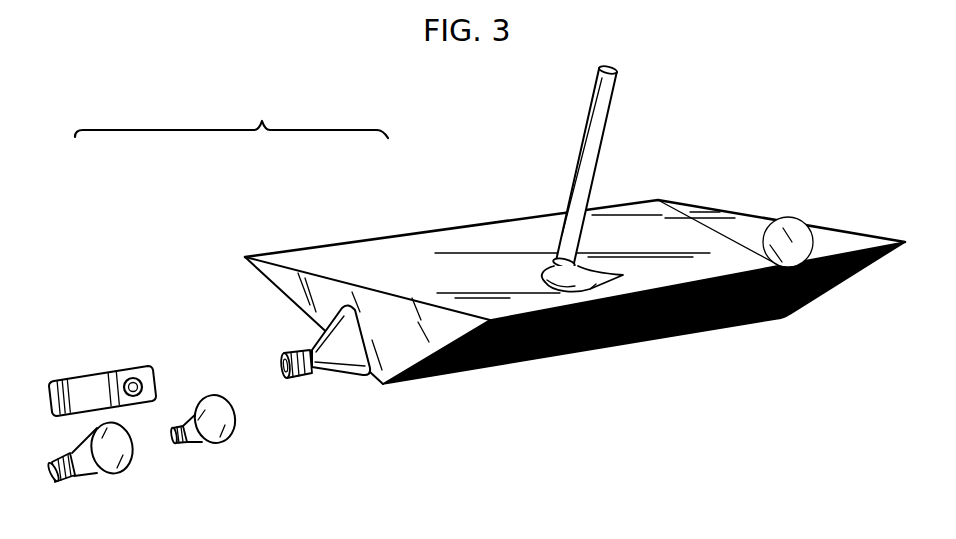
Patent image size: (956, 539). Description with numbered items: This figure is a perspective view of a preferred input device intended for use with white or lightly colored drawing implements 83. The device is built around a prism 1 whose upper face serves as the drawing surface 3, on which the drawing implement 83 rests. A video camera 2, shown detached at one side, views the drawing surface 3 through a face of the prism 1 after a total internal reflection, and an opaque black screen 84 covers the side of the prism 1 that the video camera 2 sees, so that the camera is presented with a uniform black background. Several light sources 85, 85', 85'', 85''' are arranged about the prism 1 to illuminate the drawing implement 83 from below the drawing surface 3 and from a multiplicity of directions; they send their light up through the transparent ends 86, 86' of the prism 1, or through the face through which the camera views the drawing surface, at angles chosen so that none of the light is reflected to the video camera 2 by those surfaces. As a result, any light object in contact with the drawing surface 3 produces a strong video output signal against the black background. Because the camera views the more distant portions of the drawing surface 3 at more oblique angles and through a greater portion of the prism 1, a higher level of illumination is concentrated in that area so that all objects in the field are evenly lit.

The prism 1 is at (822, 242).
The video camera 2 is at (49, 399).
The drawing surface 3 is at (431, 280).
The drawing implement 83 is at (548, 278).
The opaque black screen 84 is at (644, 313).
The light source 85 is at (325, 363).
The light source 85' is at (787, 231).
The light source 85'' is at (91, 460).
The light source 85''' is at (207, 437).
The transparent end 86 is at (336, 321).
The transparent end 86' is at (719, 220).